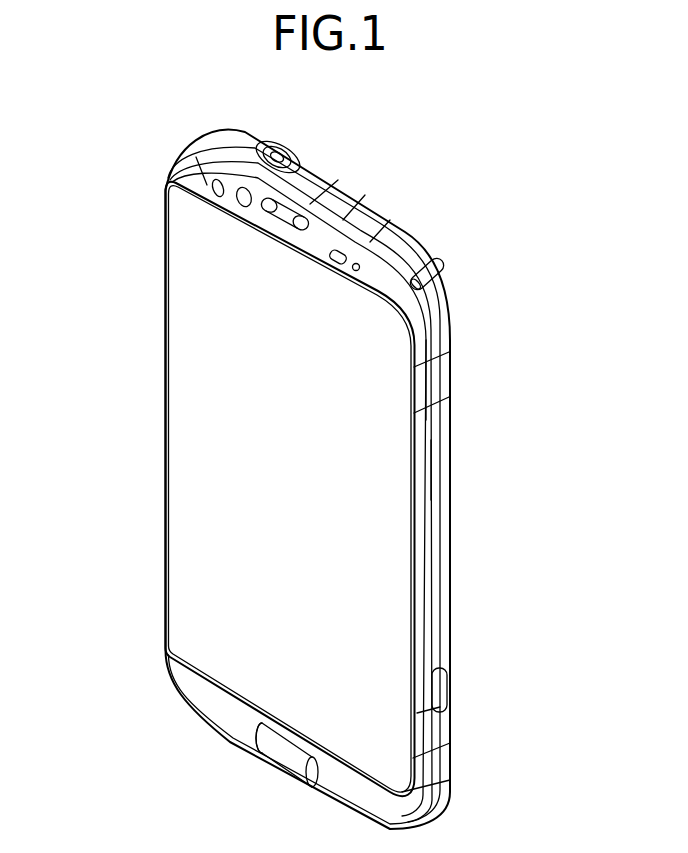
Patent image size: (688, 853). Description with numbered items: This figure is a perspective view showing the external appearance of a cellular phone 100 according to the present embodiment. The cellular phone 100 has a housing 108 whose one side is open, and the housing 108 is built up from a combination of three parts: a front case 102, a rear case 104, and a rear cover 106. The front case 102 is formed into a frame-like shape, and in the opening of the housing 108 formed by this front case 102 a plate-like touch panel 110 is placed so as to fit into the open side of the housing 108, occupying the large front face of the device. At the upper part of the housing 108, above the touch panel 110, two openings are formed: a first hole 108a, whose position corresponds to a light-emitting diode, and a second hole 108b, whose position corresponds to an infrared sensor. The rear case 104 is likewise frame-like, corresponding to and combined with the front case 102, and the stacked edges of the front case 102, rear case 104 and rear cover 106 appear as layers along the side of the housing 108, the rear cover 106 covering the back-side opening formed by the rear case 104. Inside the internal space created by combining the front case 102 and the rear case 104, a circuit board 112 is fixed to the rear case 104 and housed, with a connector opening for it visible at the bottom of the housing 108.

The cellular phone 100 is at (80, 137).
The front case 102 is at (420, 335).
The rear case 104 is at (437, 465).
The rear cover 106 is at (452, 530).
The housing 108 is at (542, 310).
The first hole 108a is at (359, 264).
The second hole 108b is at (341, 252).
The touch panel 110 is at (200, 322).
The circuit board 112 is at (292, 757).